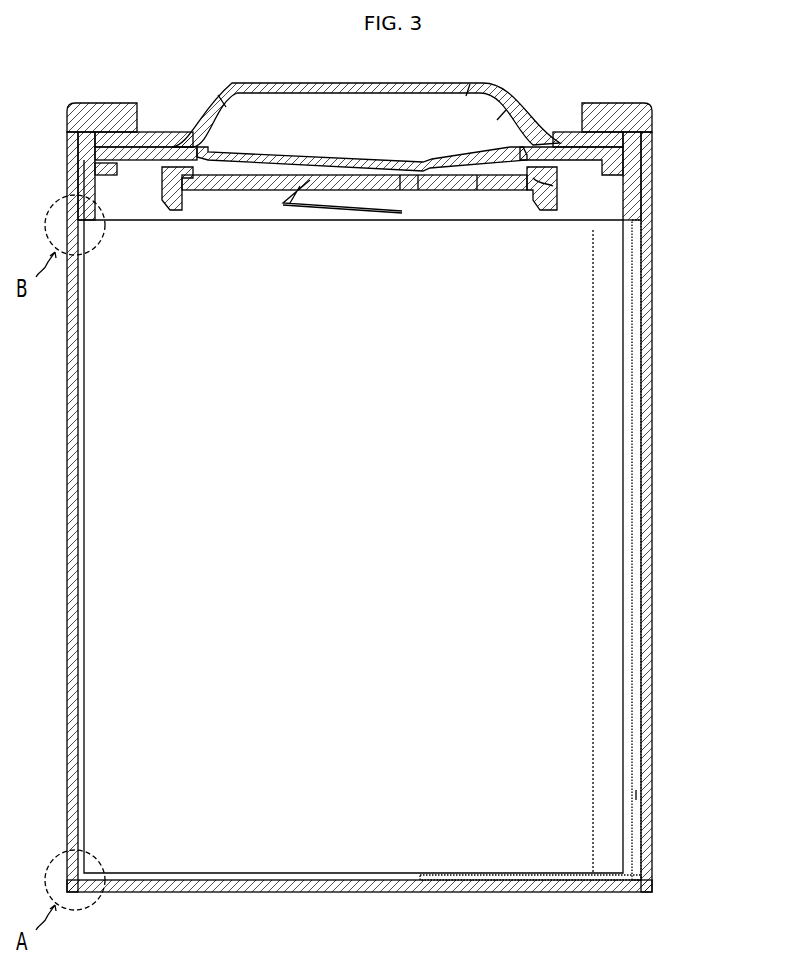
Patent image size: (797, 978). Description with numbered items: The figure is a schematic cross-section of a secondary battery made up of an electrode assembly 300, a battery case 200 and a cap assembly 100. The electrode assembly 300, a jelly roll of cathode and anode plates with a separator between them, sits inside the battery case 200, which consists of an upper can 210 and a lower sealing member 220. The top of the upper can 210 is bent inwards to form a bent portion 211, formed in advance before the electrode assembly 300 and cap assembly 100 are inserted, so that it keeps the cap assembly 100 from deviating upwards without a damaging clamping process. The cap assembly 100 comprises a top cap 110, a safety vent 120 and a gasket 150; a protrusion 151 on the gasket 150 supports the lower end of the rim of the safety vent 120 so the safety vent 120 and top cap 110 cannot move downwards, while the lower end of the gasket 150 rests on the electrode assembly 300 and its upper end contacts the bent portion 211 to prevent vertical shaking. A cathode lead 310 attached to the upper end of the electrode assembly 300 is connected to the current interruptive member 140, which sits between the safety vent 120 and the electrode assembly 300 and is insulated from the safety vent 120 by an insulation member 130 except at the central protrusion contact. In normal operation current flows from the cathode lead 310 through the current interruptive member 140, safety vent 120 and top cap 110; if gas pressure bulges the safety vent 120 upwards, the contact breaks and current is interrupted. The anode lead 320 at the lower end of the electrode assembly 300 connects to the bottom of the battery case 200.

The cap assembly 100 is at (712, 95).
The top cap 110 is at (650, 113).
The safety vent 120 is at (617, 138).
The insulation member 130 is at (553, 186).
The current interruptive member 140 is at (560, 200).
The gasket 150 is at (637, 199).
The protrusion 151 is at (90, 176).
The battery case 200 is at (715, 830).
The upper can 210 is at (652, 843).
The bent portion 211 is at (100, 103).
The lower sealing member 220 is at (648, 888).
The electrode assembly 300 is at (620, 335).
The cathode lead 310 is at (283, 201).
The anode lead 320 is at (640, 800).